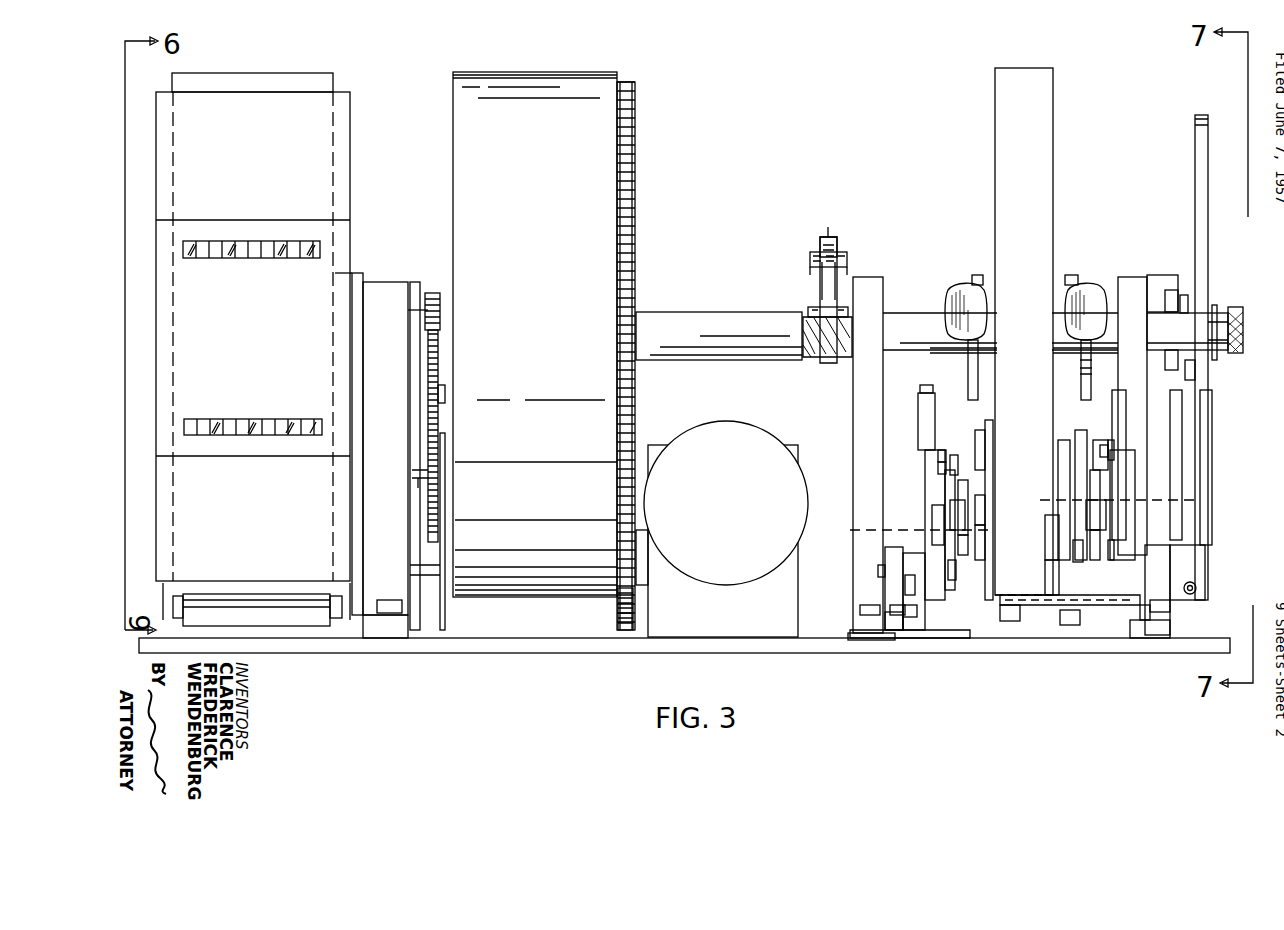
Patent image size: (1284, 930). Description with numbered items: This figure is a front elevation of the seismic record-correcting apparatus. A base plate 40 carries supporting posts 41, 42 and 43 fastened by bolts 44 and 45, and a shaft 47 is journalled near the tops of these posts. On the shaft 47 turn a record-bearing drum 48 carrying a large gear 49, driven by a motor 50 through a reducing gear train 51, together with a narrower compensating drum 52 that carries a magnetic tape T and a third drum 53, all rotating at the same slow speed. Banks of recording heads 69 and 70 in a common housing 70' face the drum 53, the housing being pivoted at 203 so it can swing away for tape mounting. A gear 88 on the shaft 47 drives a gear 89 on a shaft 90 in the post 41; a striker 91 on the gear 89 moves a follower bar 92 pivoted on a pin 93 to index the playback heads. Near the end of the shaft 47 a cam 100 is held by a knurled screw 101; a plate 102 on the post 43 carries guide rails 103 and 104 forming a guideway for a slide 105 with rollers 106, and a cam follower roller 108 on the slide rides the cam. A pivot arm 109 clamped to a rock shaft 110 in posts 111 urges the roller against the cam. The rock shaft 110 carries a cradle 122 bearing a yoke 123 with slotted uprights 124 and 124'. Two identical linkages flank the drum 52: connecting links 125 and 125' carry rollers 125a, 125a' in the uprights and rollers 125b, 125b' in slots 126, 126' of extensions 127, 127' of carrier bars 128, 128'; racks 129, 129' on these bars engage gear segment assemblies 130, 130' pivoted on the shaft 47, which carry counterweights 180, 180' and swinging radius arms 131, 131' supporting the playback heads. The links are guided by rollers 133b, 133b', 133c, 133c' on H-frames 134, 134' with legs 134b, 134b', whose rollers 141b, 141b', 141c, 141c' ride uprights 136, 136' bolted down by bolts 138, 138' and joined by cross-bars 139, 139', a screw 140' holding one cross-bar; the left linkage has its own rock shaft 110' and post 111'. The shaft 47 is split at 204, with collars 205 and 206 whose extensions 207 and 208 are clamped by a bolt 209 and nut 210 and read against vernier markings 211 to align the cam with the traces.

The base plate 40 is at (1030, 652).
The supporting post 41 is at (385, 290).
The supporting post 42 is at (875, 280).
The supporting post 43 is at (1130, 285).
The bolt 44 is at (390, 600).
The bolt 45 is at (862, 612).
The shaft 47 is at (413, 300).
The drum 48 is at (575, 75).
The large gear 49 is at (636, 108).
The motor 50 is at (768, 445).
The reducing gear train 51 is at (634, 608).
The drum 52 is at (1035, 78).
The drum 53 is at (255, 78).
The recording heads 69 is at (302, 236).
The recording heads 70 is at (253, 410).
The housing 70' is at (266, 314).
The gear 88 is at (432, 292).
The gear 89 is at (427, 428).
The shaft 90 is at (420, 478).
The striker 91 is at (446, 390).
The follower bar 92 is at (446, 505).
The pin 93 is at (420, 566).
The cam 100 is at (1202, 120).
The knurled screw 101 is at (1236, 310).
The plate 102 is at (1163, 306).
The guide rail 103 is at (1166, 270).
The guide rail 104 is at (1196, 380).
The slide 105 is at (1184, 295).
The rollers 106 is at (1171, 290).
The cam follower roller 108 is at (1215, 305).
The pivot arm 109 is at (1200, 404).
The rock shaft 110 is at (1175, 590).
The rock shaft 110' is at (864, 588).
The supporting post 111 is at (1160, 645).
The supporting post 111' is at (895, 651).
The cradle structure 122 is at (1037, 597).
The yoke 123 is at (1005, 622).
The slotted upright 124 is at (1147, 505).
The slotted upright 124' is at (879, 522).
The connecting link 125 is at (1135, 515).
The connecting link 125' is at (886, 527).
The roller 125a is at (1149, 492).
The roller 125a' is at (898, 527).
The roller 125b is at (1032, 537).
The roller 125b' is at (1014, 502).
The slot 126 is at (1032, 577).
The slot 126' is at (1008, 532).
The extension 127 is at (1081, 562).
The extension 127' is at (967, 572).
The horizontal carrier bar 128 is at (1049, 488).
The horizontal carrier bar 128' is at (1013, 510).
The rack 129 is at (1086, 472).
The rack 129' is at (960, 417).
The gear segment assembly 130 is at (1061, 300).
The gear segment assembly 130' is at (981, 300).
The swinging radius arm 131 is at (1064, 328).
The swinging radius arm 131' is at (986, 348).
The roller 133b is at (1142, 493).
The roller 133b' is at (891, 507).
The roller 133c is at (1142, 541).
The roller 133c' is at (930, 589).
The H-frame 134 is at (1101, 449).
The H-frame 134' is at (903, 435).
The vertical leg 134b is at (1179, 446).
The vertical leg 134b' is at (879, 473).
The upright 136 is at (1148, 465).
The upright 136' is at (887, 508).
The bolt 138 is at (1132, 647).
The bolt 138' is at (931, 651).
The cross-bar 139 is at (1170, 465).
The cross-bar 139' is at (875, 489).
The screw 140' is at (909, 386).
The roller 141b is at (1191, 438).
The roller 141b' is at (884, 460).
The roller 141c is at (1182, 543).
The roller 141c' is at (887, 554).
The counterweight 180 is at (1086, 289).
The counterweight 180' is at (962, 289).
The pivot 203 is at (345, 606).
The split 204 is at (845, 340).
The collar 205 is at (808, 310).
The collar 206 is at (850, 312).
The extension 207 is at (822, 250).
The extension 208 is at (838, 250).
The bolt 209 is at (810, 260).
The nut 210 is at (812, 268).
The vernier markings 211 is at (829, 240).
The magnetic tape T is at (1043, 128).